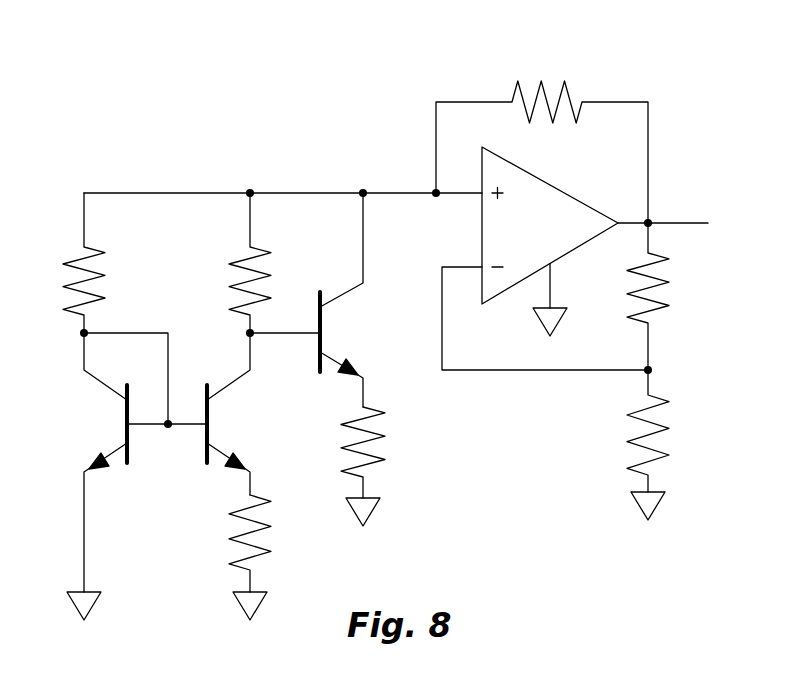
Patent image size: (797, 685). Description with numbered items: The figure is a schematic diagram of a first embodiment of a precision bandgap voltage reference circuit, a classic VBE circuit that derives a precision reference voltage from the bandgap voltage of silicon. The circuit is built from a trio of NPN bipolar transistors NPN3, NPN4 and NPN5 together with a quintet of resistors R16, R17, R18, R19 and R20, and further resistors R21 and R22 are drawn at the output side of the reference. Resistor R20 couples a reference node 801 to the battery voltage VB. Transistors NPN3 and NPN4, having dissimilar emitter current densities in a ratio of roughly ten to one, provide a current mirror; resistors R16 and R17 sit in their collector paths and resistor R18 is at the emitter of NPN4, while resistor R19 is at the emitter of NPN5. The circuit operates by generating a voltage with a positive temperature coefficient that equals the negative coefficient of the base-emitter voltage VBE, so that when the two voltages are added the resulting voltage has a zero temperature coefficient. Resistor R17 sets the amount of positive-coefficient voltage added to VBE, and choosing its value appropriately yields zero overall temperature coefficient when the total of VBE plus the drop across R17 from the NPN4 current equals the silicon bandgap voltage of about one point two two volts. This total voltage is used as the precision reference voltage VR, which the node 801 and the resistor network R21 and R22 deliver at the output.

The resistor R16 is at (60, 263).
The resistor R17 is at (221, 263).
The resistor R18 is at (223, 557).
The resistor R19 is at (389, 466).
The resistor R20 is at (542, 137).
The resistor R21 is at (675, 296).
The resistor R22 is at (676, 445).
The NPN bipolar transistor NPN3 is at (76, 476).
The NPN bipolar transistor NPN4 is at (242, 414).
The NPN bipolar transistor NPN5 is at (360, 300).
The reference node 801 is at (550, 241).
The precision reference voltage VR is at (683, 224).
The base-emitter voltage VBE is at (288, 332).
The battery voltage VB is at (403, 193).